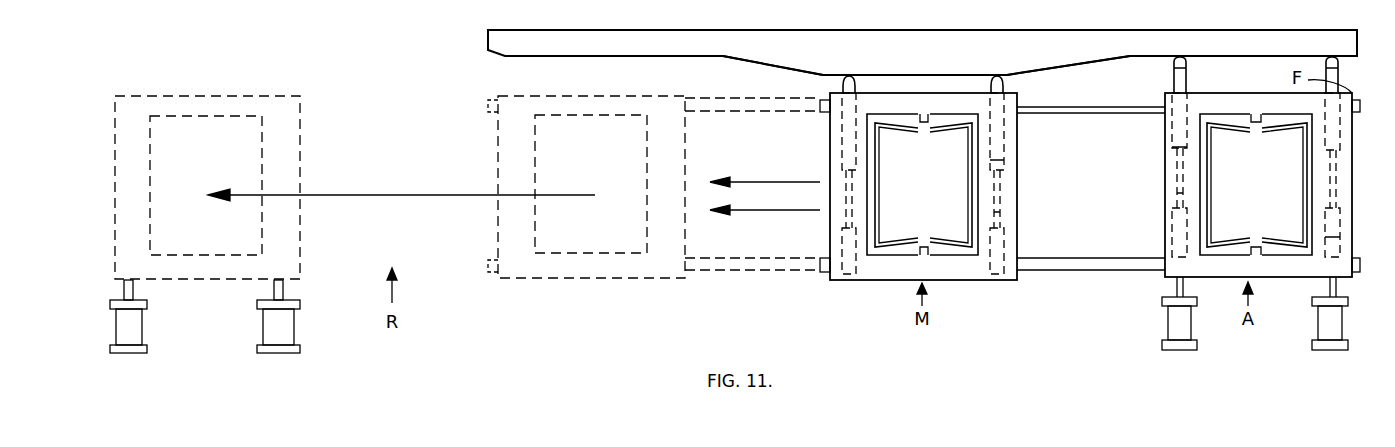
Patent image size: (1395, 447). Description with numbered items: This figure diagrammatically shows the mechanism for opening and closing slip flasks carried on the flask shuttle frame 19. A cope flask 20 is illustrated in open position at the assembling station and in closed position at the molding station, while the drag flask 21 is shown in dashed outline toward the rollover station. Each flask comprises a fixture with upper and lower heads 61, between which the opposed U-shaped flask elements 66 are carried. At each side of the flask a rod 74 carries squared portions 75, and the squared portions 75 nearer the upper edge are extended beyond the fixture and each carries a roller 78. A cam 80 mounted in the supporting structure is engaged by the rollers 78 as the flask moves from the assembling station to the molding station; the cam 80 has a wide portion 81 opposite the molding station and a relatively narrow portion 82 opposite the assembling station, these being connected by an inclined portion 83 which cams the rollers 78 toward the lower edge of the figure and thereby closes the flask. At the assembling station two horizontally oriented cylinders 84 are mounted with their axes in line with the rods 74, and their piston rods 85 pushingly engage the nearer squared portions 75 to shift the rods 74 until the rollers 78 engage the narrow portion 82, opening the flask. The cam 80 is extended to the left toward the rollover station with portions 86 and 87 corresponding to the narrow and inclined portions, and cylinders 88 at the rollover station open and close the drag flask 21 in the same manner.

The flask shuttle frame 19 is at (770, 268).
The cope flask 20 is at (1222, 270).
The drag flask 21 is at (290, 270).
The upper and lower heads 61 is at (928, 118).
The flask elements 66 is at (965, 152).
The rod 74 is at (1002, 212).
The squared portions 75 is at (1000, 162).
The roller 78 is at (1008, 75).
The cam 80 is at (951, 59).
The wide portion 81 is at (890, 74).
The narrow portion 82 is at (1160, 58).
The inclined portion 83 is at (1090, 70).
The cylinders 84 is at (1318, 333).
The piston rods 85 is at (1175, 290).
The portion 86 is at (590, 57).
The portion 87 is at (770, 66).
The cylinders 88 is at (273, 325).